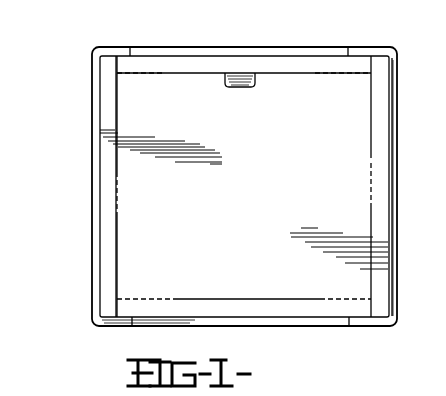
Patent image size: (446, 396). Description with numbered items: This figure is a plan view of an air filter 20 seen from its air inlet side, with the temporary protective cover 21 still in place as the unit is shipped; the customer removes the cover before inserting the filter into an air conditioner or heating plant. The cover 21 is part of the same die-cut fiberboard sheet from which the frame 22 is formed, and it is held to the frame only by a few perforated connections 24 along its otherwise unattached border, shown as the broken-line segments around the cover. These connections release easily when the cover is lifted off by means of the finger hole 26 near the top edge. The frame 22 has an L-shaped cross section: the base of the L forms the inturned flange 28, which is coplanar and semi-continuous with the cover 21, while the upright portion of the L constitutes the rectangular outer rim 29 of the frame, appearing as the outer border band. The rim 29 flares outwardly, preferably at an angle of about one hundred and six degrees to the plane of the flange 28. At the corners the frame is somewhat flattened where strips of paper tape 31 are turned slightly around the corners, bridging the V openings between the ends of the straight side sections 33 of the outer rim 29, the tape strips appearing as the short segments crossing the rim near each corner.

The air filter 20 is at (298, 327).
The temporary protective cover 21 is at (238, 204).
The frame 22 is at (383, 127).
The perforated connections 24 is at (118, 170).
The finger hole 26 is at (246, 86).
The inturned flange 28 is at (284, 63).
The rectangular outer rim 29 is at (191, 51).
The strips of paper tape 31 is at (112, 49).
The straight side sections 33 is at (400, 268).